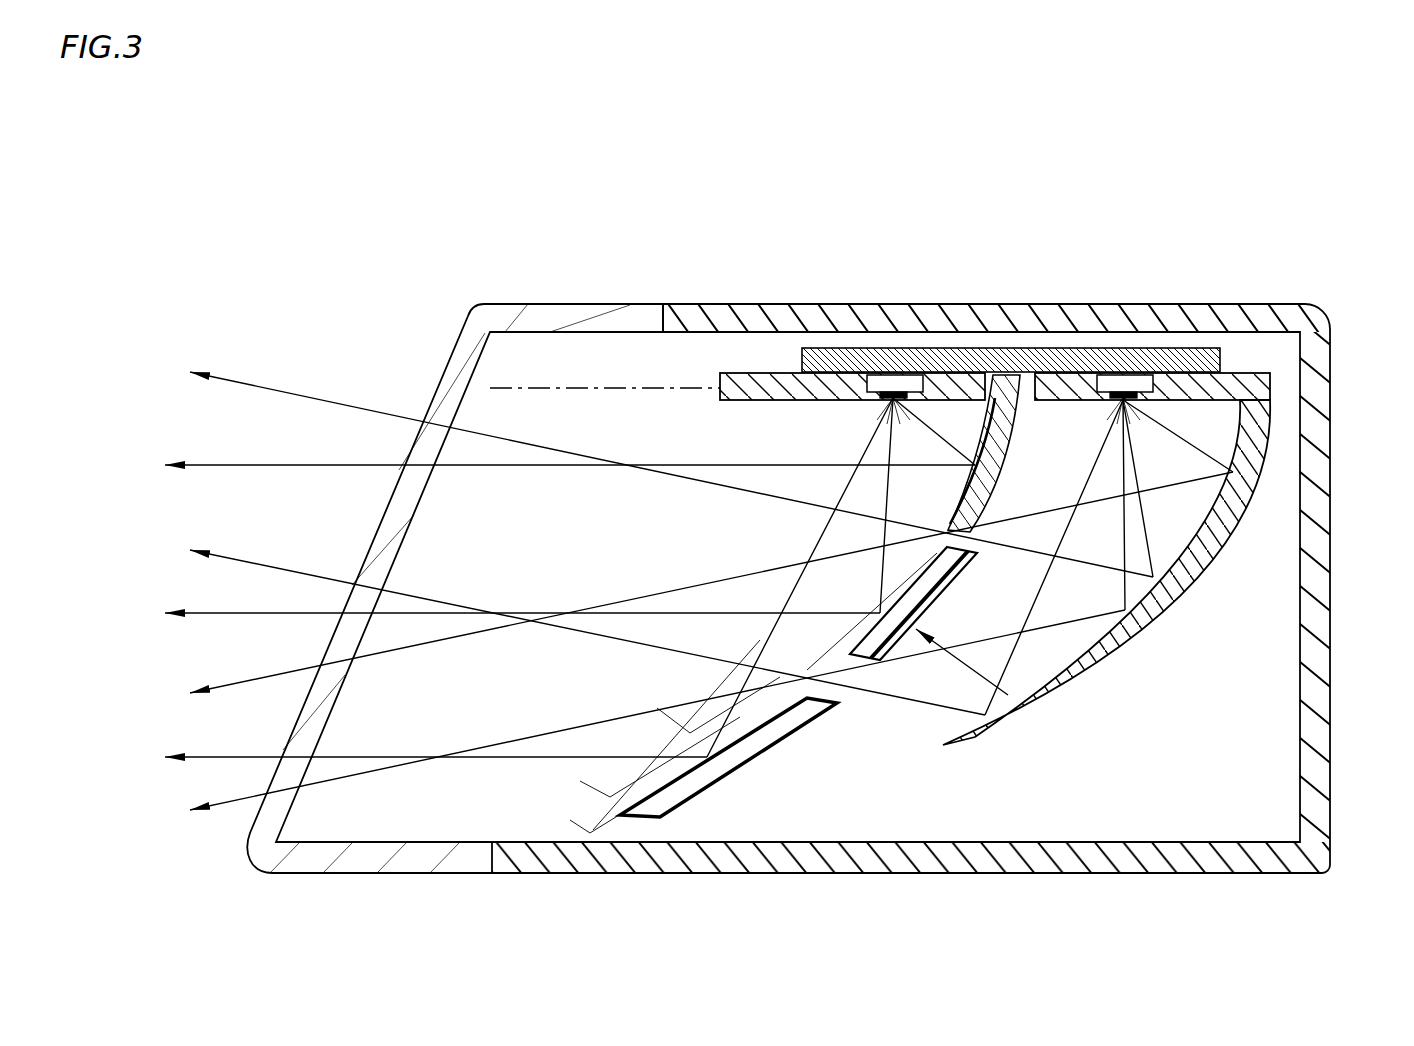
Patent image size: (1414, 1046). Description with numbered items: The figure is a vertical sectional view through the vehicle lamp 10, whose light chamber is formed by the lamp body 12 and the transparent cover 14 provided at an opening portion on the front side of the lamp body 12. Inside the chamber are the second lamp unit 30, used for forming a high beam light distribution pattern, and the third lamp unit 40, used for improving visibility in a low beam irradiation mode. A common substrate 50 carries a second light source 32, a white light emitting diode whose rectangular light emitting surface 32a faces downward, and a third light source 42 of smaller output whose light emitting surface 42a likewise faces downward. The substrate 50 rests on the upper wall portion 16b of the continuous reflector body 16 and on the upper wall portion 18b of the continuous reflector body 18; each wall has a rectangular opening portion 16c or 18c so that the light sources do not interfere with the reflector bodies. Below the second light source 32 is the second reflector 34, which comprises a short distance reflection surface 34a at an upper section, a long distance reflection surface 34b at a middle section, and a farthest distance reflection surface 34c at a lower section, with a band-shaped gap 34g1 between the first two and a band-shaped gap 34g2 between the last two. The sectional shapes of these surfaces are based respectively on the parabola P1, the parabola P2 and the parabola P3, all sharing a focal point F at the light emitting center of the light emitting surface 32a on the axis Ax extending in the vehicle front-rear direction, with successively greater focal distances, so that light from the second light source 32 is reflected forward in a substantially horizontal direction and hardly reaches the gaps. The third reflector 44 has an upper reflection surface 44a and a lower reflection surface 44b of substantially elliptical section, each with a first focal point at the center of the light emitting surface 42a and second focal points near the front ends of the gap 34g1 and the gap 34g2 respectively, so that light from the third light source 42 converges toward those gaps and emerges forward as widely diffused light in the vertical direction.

The vehicle lamp 10 is at (347, 218).
The lamp body 12 is at (1270, 303).
The transparent cover 14 is at (455, 358).
The continuous reflector body 16 is at (1040, 693).
The upper wall portion 16b is at (747, 372).
The opening portion 16c is at (857, 403).
The continuous reflector body 18 is at (1215, 593).
The upper wall portion 18b is at (1237, 373).
The opening portion 18c is at (1092, 400).
The second lamp unit 30 is at (872, 343).
The second light source 32 is at (897, 388).
The light emitting surface 32a is at (890, 403).
The second reflector 34 is at (849, 605).
The short distance reflection surface 34a is at (955, 502).
The long distance reflection surface 34b is at (950, 549).
The farthest distance reflection surface 34c is at (717, 703).
The band-shaped gap 34g1 is at (1105, 612).
The band-shaped gap 34g2 is at (948, 784).
The third lamp unit 40 is at (1100, 342).
The third light source 42 is at (1128, 388).
The light emitting surface 42a is at (1122, 401).
The third reflector 44 is at (1105, 572).
The upper reflection surface 44a is at (1215, 540).
The lower reflection surface 44b is at (1073, 655).
The substrate 50 is at (817, 345).
The focal point F is at (924, 447).
The axis Ax is at (550, 390).
The parabola P1 is at (647, 703).
The parabola P2 is at (578, 781).
The parabola P3 is at (568, 820).